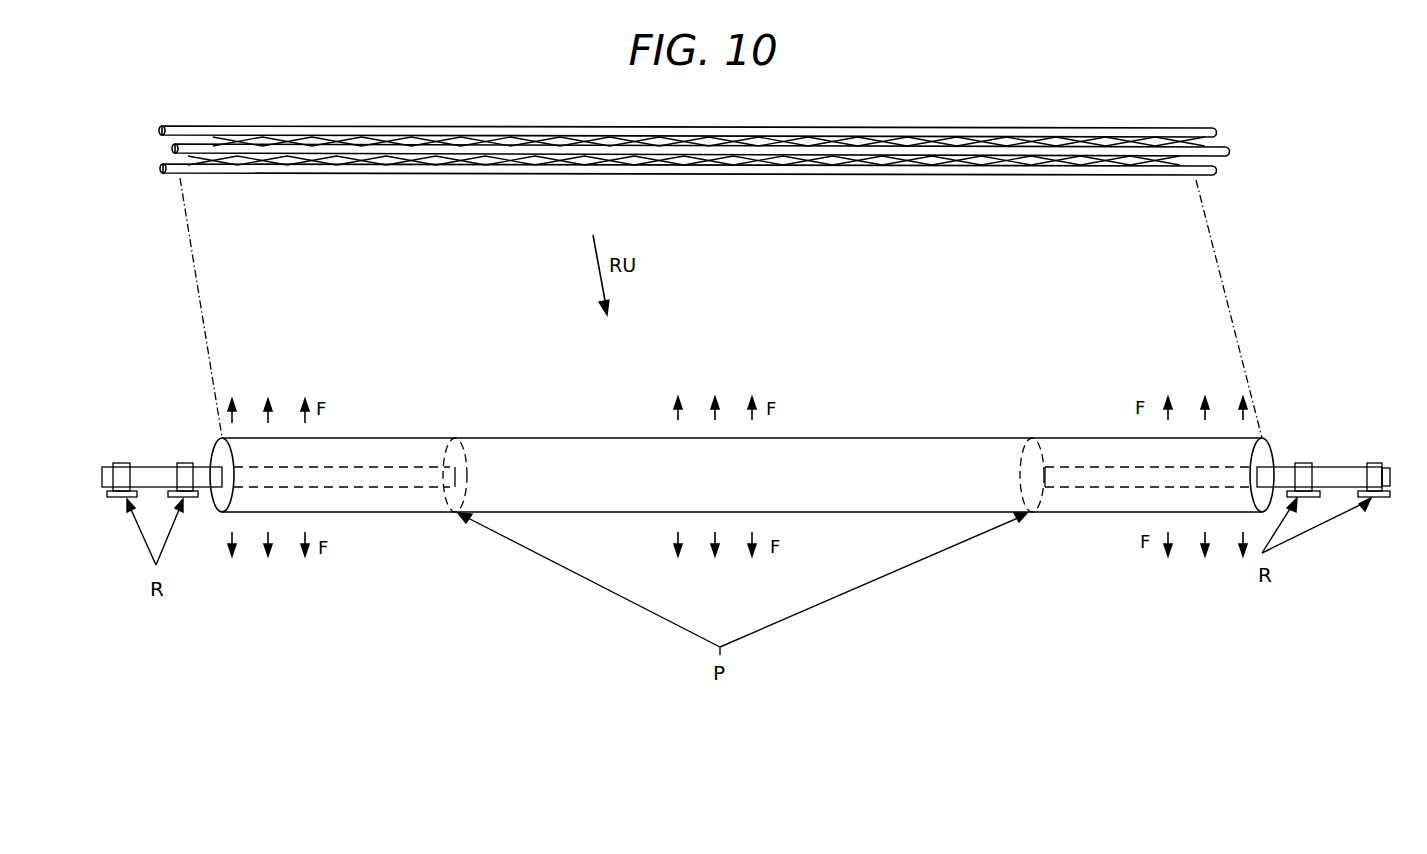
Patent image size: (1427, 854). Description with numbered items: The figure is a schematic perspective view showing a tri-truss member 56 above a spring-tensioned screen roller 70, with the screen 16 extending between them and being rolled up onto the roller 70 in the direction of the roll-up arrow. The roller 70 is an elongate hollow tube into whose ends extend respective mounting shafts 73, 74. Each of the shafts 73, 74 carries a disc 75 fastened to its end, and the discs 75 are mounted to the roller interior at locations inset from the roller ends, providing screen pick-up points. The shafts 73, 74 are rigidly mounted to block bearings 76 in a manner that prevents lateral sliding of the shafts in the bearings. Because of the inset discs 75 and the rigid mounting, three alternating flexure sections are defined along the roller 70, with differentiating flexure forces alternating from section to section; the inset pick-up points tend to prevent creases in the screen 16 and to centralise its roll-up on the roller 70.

The tri-truss member 56 is at (1194, 102).
The screen 16 is at (419, 292).
The screen roller 70 is at (1272, 431).
The mounting shaft 73 is at (149, 470).
The mounting shaft 74 is at (1334, 470).
The disc 75 is at (455, 456).
The block bearing 76 is at (121, 463).